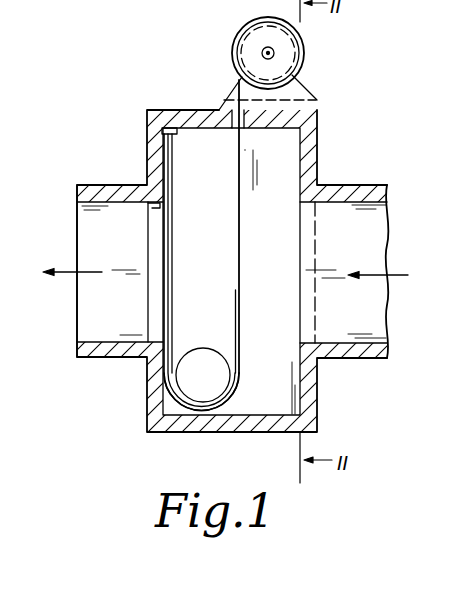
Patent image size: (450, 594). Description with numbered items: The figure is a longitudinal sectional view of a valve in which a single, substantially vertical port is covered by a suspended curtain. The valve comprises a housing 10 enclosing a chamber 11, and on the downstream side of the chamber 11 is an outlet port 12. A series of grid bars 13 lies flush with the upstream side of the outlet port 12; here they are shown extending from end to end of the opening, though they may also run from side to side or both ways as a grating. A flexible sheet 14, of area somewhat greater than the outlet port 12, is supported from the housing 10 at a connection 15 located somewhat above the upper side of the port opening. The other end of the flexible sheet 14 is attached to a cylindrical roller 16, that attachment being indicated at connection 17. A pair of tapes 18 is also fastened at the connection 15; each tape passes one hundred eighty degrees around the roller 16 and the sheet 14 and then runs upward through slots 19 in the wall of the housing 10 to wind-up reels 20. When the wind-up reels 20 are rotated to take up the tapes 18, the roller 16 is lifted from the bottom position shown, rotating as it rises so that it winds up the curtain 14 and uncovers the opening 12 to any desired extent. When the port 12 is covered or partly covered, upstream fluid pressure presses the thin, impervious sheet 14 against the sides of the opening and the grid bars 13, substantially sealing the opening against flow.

The housing 10 is at (317, 149).
The chamber 11 is at (278, 272).
The outlet port 12 is at (149, 207).
The grid bars 13 is at (155, 240).
The flexible sheet 14 is at (178, 229).
The connection 15 is at (178, 131).
The cylindrical roller 16 is at (173, 387).
The connection of sheet to roller 17 is at (218, 354).
The tapes 18 is at (242, 232).
The slots 19 is at (232, 125).
The wind-up reels 20 is at (304, 53).